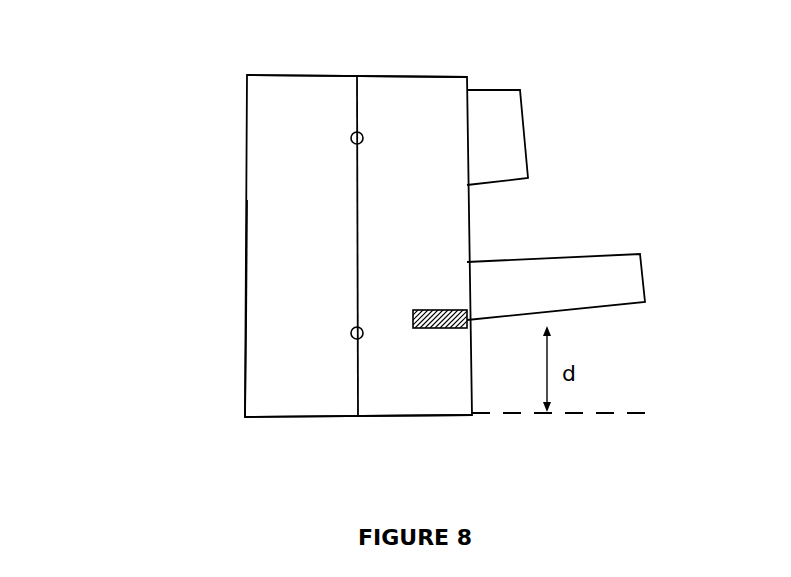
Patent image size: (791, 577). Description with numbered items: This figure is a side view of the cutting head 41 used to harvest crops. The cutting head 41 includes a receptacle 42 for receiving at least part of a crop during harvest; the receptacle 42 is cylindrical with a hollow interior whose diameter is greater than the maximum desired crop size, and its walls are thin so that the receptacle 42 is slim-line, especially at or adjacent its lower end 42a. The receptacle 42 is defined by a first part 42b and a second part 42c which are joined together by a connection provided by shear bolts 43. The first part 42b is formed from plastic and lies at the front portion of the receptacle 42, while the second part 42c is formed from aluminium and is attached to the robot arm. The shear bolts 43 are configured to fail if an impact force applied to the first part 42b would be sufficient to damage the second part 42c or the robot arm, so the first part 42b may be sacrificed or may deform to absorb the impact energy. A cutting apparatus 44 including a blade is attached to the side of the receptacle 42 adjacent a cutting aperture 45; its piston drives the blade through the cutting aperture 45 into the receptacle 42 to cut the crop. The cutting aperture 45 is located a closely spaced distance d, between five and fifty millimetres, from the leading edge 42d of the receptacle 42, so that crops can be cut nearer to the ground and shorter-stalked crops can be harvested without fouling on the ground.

The cutting head 41 is at (370, 249).
The receptacle 42 is at (248, 172).
The lower end of the receptacle 42a is at (248, 385).
The first part of the receptacle 42b is at (253, 260).
The second part of the receptacle 42c is at (432, 78).
The leading edge of the receptacle 42d is at (285, 420).
The shear bolts 43 is at (353, 134).
The cutting apparatus 44 is at (615, 252).
The cutting aperture 45 is at (422, 328).